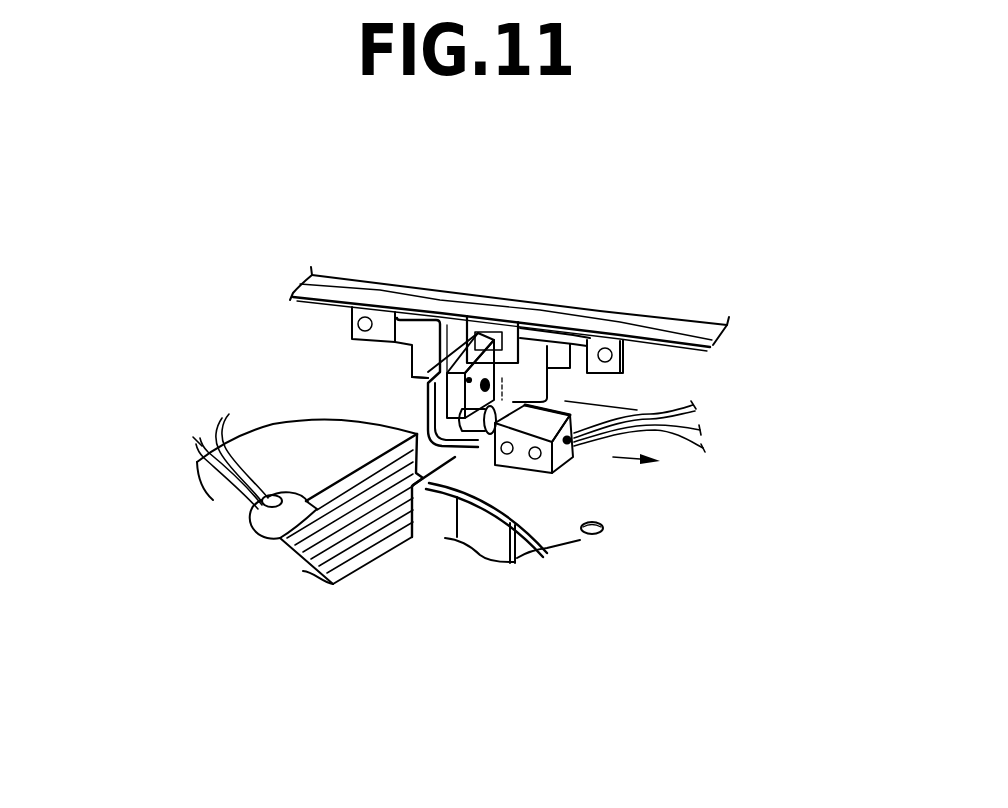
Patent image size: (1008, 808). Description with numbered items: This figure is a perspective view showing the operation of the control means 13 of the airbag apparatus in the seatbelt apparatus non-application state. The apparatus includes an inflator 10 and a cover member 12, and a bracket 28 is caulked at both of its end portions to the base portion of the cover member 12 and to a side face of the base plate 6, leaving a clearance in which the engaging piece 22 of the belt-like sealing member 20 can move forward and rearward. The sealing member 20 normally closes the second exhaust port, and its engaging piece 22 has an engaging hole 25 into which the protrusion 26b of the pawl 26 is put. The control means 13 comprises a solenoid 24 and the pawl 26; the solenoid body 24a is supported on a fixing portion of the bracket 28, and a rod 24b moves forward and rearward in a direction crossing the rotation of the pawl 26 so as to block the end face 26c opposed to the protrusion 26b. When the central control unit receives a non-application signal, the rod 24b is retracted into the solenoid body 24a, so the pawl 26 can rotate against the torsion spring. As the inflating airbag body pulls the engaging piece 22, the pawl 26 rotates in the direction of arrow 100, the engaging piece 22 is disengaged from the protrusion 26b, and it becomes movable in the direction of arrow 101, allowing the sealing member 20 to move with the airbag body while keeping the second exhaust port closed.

The base plate 6 is at (655, 355).
The inflator 10 is at (282, 452).
The cover member 12 is at (338, 290).
The control means 13 is at (590, 248).
The sealing member 20 is at (523, 560).
The engaging piece 22 is at (520, 308).
The solenoid 24 is at (590, 485).
The solenoid body 24a is at (580, 447).
The rod 24b is at (483, 440).
The engaging hole 25 is at (497, 335).
The pawl 26 is at (462, 327).
The protrusion 26b is at (486, 340).
The end face 26c is at (425, 378).
The bracket 28 is at (604, 338).
The arrow 100 is at (427, 417).
The arrow 101 is at (485, 568).